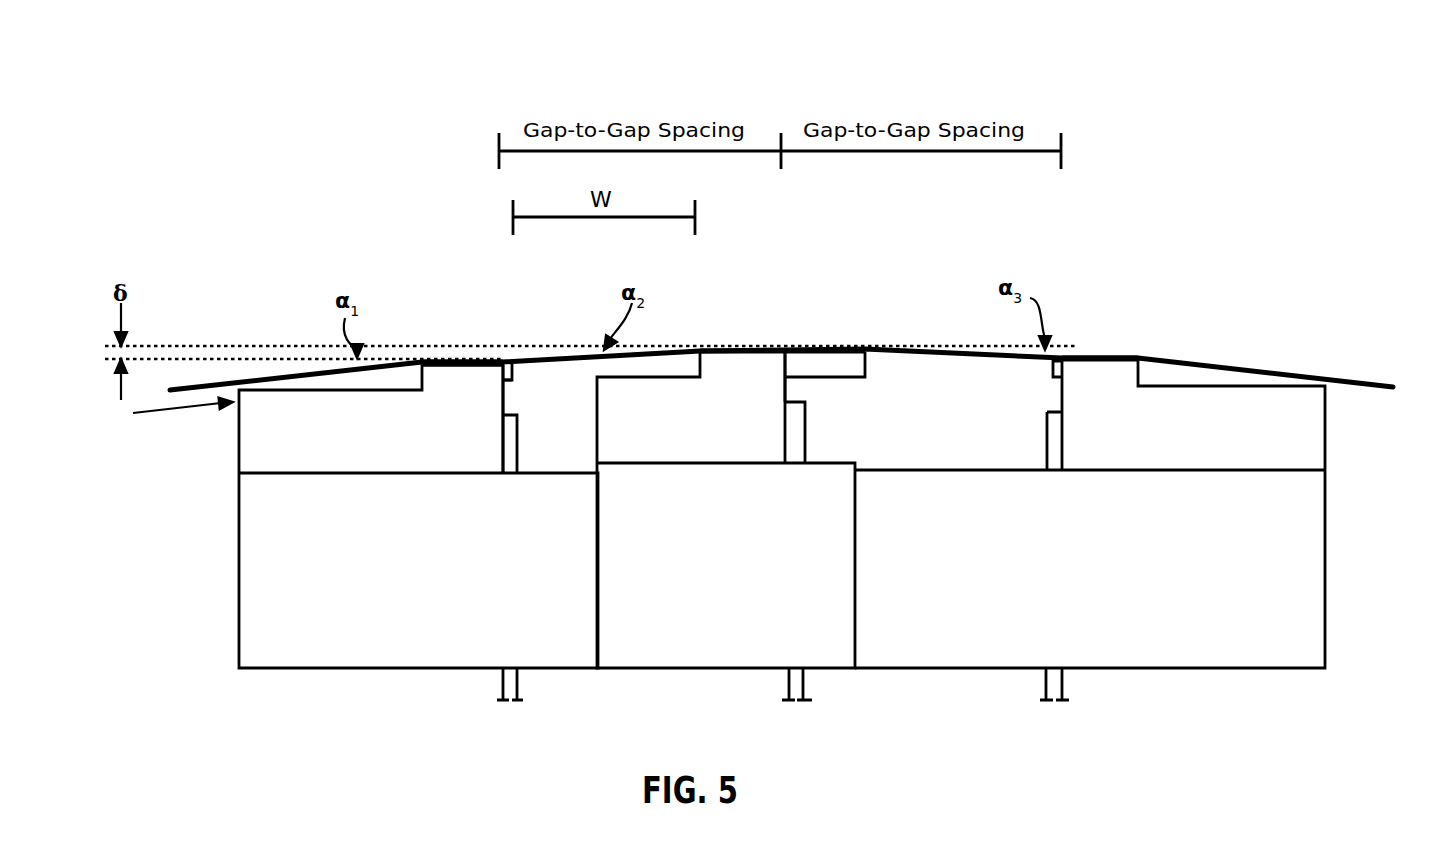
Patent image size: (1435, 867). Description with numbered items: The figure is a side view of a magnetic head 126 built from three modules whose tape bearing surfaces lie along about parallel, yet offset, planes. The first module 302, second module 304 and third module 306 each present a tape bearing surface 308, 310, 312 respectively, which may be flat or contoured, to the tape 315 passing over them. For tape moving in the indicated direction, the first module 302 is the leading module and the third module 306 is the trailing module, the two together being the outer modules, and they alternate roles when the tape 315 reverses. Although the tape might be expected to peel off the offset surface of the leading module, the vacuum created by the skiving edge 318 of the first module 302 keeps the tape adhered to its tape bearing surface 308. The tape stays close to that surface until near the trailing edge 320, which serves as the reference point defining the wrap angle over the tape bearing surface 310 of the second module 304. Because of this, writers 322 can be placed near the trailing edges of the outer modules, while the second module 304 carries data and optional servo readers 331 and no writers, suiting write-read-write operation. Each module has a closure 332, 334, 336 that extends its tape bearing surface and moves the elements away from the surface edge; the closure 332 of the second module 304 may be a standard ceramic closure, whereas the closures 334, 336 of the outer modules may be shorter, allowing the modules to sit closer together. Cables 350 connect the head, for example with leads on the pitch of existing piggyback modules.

The magnetic head 126 is at (402, 220).
The first module 302 is at (239, 440).
The second module 304 is at (676, 377).
The third module 306 is at (1325, 435).
The tape bearing surface 308 is at (473, 343).
The tape bearing surface 310 is at (730, 337).
The tape bearing surface 312 is at (1090, 344).
The tape 315 is at (1192, 358).
The skiving edge 318 is at (398, 376).
The trailing edge 320 is at (525, 368).
The writers 322 is at (500, 343).
The data and optional servo readers 331 is at (787, 336).
The closure 332 is at (833, 377).
The closure 334 is at (514, 376).
The closure 336 is at (1050, 366).
The cables 350 is at (520, 683).